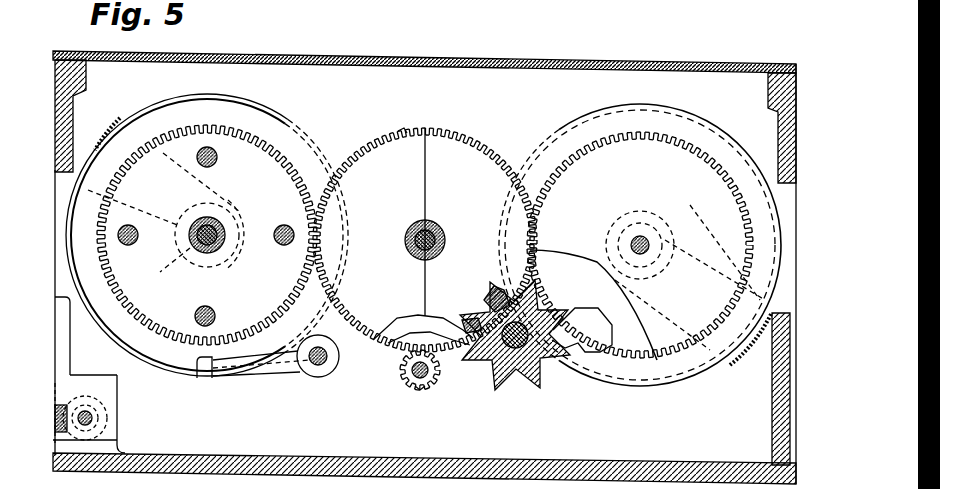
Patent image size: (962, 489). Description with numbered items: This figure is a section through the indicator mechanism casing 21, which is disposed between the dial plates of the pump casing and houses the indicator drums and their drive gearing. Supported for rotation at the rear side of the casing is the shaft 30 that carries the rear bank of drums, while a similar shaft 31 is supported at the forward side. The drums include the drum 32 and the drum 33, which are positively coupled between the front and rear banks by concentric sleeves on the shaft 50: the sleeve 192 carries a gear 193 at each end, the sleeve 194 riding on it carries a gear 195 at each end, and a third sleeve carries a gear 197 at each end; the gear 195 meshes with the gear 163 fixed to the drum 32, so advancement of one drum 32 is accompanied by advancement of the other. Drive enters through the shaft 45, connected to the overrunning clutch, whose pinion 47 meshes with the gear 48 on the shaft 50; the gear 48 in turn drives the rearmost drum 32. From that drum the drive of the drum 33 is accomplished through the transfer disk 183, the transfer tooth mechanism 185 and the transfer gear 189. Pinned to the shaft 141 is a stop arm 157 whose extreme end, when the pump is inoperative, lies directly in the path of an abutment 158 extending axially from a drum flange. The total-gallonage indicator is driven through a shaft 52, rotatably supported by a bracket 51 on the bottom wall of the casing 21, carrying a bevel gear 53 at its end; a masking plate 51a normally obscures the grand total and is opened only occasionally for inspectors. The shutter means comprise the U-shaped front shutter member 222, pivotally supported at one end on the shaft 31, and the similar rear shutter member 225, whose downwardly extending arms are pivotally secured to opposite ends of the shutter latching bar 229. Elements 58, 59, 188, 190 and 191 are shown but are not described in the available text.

The indicator mechanism casing 21 is at (445, 460).
The shutter latching bar 229 is at (458, 58).
The shaft 30 is at (652, 253).
The shaft 31 is at (203, 255).
The indicator drum 32 is at (596, 115).
The indicator drum 33 is at (296, 125).
The shaft 45 is at (414, 378).
The pinion 47 is at (420, 389).
The gear 48 is at (436, 352).
The shaft 50 is at (437, 232).
The bracket 51 is at (107, 376).
The masking plate 51a is at (65, 433).
The shaft 52 is at (94, 420).
The bevel gear 53 is at (110, 404).
The shaft 58 is at (193, 237).
The bearing 59 is at (197, 219).
The shaft 141 is at (318, 376).
The stop arm 157 is at (282, 378).
The abutment 158 is at (203, 378).
The gear 163 is at (294, 177).
The transfer disk 183 is at (645, 326).
The transfer tooth mechanism 185 is at (595, 318).
The sectioned gear 188 is at (505, 358).
The transfer gear 189 is at (505, 382).
The pawl pad 190 is at (466, 320).
The pawl lobe 191 is at (490, 290).
The sleeve 192 is at (412, 250).
The gear 193 is at (385, 343).
The sleeve 194 is at (414, 224).
The gear 195 is at (410, 117).
The gear 197 is at (462, 137).
The front shutter member 222 is at (113, 118).
The rear shutter member 225 is at (735, 368).